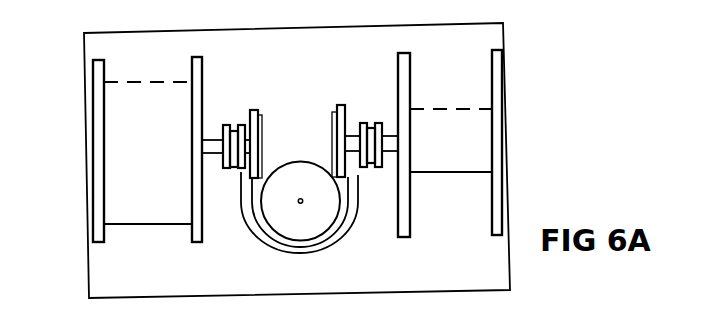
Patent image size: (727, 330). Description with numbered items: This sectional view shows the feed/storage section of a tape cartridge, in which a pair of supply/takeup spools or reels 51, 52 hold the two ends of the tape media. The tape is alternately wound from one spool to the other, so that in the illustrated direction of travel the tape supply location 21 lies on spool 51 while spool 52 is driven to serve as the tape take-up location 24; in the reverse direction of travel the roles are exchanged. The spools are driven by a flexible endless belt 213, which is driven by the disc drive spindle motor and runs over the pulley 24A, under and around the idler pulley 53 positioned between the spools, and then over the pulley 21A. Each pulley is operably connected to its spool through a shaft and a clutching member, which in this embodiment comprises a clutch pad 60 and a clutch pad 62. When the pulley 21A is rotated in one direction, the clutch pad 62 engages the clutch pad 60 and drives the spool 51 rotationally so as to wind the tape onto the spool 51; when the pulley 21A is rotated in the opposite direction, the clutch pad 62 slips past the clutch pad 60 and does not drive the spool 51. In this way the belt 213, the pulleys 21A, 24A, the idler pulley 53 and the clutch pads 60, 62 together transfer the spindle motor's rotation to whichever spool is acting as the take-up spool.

The tape supply location 21 is at (160, 172).
The tape take-up location 24 is at (460, 154).
The pulley 21A is at (250, 115).
The pulley 24A is at (345, 113).
The supply/takeup spool 51 is at (98, 212).
The supply/takeup spool 52 is at (503, 212).
The idler pulley 53 is at (312, 229).
The clutch pad 60 is at (222, 170).
The clutch pad 62 is at (244, 185).
The flexible belt 213 is at (337, 178).